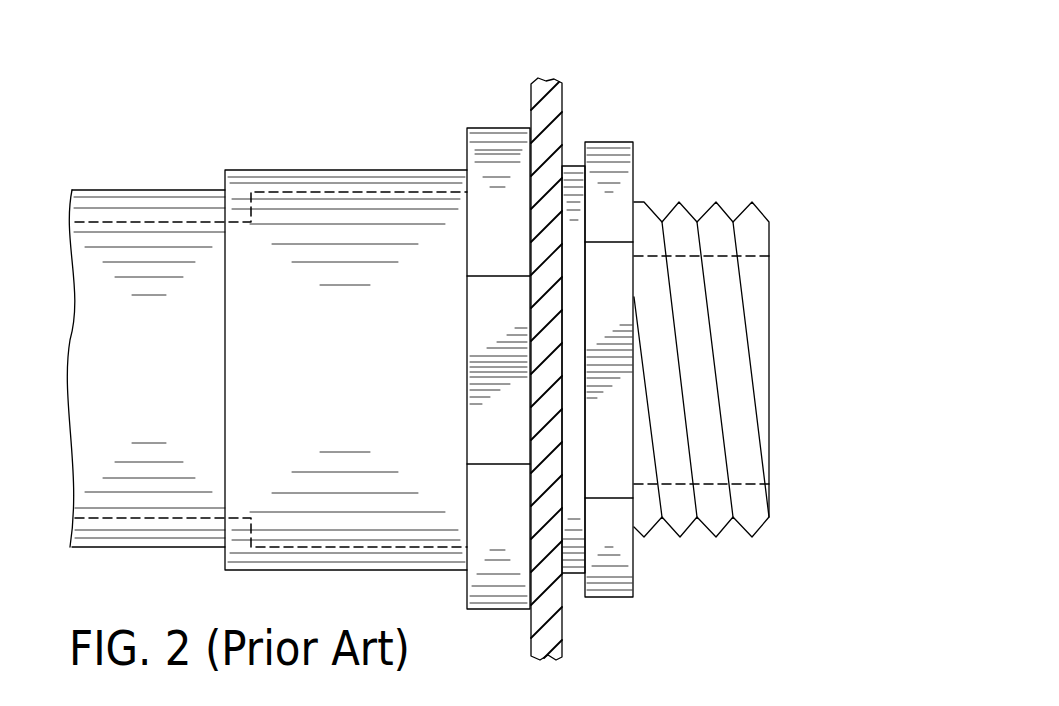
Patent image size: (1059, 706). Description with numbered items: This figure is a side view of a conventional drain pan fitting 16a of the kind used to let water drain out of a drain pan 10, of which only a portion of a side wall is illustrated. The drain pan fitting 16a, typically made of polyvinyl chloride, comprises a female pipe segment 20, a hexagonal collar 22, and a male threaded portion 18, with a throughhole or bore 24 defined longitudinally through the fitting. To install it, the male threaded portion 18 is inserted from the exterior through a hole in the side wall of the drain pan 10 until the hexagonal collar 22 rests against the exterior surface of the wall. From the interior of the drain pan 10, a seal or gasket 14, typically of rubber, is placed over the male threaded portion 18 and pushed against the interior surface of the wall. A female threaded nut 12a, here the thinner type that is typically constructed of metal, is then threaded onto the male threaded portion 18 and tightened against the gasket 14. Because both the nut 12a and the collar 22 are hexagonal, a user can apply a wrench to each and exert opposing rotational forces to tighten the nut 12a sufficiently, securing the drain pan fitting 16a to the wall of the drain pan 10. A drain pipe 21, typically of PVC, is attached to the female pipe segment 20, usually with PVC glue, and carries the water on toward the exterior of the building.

The drain pan 10 is at (543, 92).
The female threaded nut 12a is at (633, 168).
The seal or gasket 14 is at (570, 167).
The drain pan fitting 16a is at (723, 74).
The male threaded portion 18 is at (728, 212).
The female pipe segment 20 is at (322, 215).
The drain pipe 21 is at (158, 203).
The hexagonal collar 22 is at (507, 137).
The throughhole or bore 24 is at (785, 401).